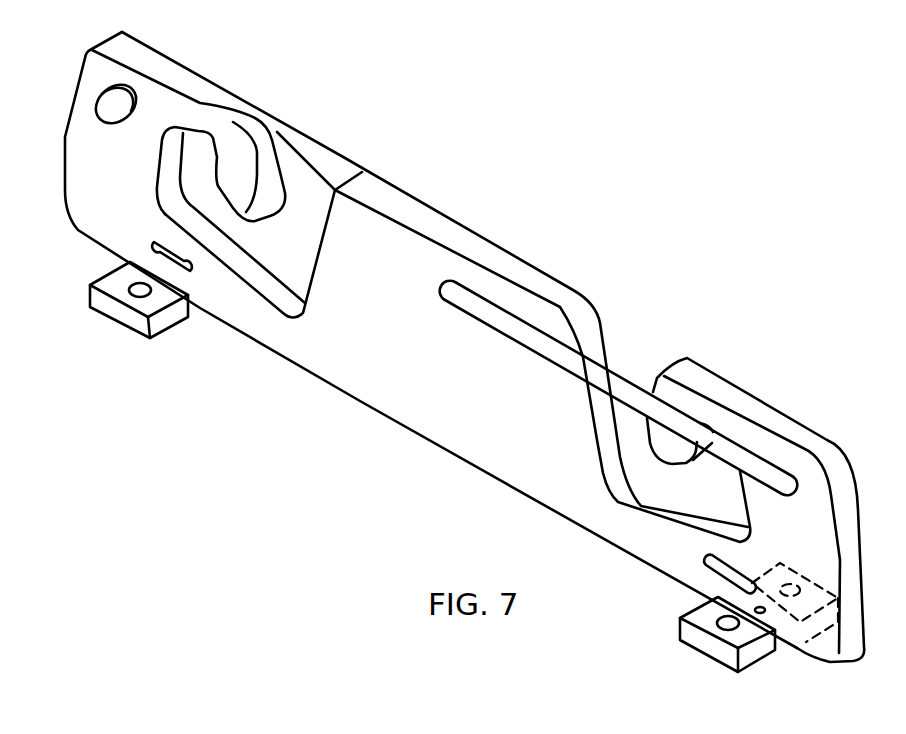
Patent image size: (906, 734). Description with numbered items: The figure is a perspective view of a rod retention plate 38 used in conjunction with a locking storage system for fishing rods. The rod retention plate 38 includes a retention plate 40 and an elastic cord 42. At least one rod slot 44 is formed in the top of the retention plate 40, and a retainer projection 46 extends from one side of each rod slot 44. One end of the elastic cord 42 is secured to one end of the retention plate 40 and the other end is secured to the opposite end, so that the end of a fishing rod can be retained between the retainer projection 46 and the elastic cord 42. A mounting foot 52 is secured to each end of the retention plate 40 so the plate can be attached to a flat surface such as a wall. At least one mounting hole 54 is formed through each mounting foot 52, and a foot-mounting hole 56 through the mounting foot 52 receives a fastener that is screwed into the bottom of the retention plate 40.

The rod retention plate 38 is at (464, 347).
The retention plate 40 is at (520, 273).
The elastic cord 42 is at (615, 382).
The rod slot 44 is at (305, 200).
The retainer projection 46 is at (242, 200).
The mounting foot 52 is at (464, 467).
The mounting hole 54 is at (150, 295).
The foot-mounting hole 56 is at (750, 592).